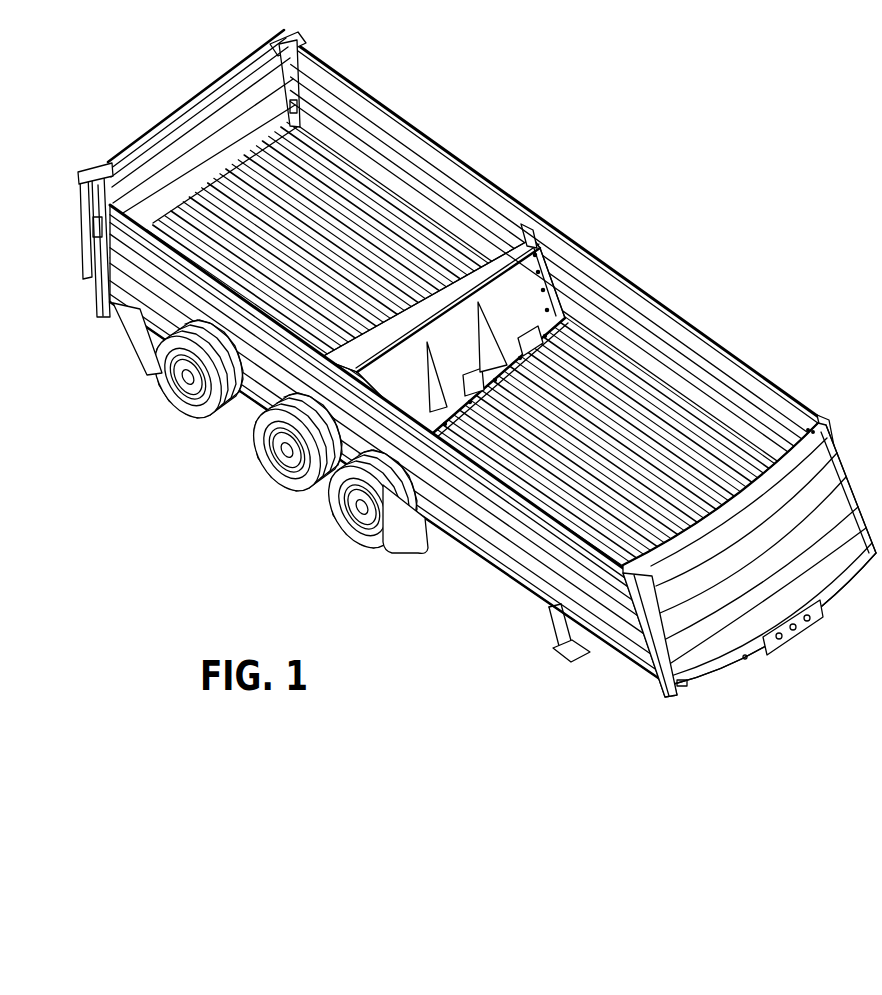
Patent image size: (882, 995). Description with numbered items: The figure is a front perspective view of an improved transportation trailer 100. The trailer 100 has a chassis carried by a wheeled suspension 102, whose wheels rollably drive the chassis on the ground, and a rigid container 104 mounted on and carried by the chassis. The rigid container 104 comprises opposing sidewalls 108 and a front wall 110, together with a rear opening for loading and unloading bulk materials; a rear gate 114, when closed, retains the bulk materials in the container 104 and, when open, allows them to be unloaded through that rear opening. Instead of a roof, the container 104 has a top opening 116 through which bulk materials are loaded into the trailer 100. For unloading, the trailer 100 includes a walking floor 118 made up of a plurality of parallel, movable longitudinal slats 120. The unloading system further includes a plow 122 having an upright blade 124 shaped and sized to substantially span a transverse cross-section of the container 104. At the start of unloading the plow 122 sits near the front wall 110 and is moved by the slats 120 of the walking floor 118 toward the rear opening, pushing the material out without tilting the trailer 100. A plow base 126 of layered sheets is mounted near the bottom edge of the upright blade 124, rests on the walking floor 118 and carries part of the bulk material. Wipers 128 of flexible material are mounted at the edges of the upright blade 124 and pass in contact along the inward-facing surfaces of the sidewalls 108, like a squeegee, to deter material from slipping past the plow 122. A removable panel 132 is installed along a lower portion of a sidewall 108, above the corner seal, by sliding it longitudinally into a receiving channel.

The trailer 100 is at (735, 110).
The wheeled suspension 102 is at (267, 468).
The rigid container 104 is at (440, 127).
The sidewalls 108 is at (340, 103).
The front wall 110 is at (803, 580).
The rear gate 114 is at (210, 102).
The top opening 116 is at (395, 227).
The walking floor 118 is at (315, 188).
The longitudinal slats 120 is at (575, 500).
The plow 122 is at (507, 307).
The upright blade 124 is at (513, 283).
The plow base 126 is at (460, 277).
The wipers 128 is at (528, 232).
The removable panel 132 is at (653, 368).